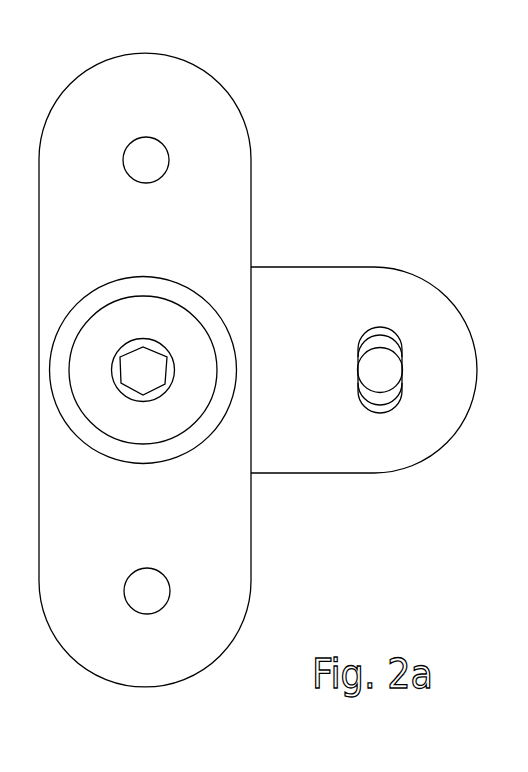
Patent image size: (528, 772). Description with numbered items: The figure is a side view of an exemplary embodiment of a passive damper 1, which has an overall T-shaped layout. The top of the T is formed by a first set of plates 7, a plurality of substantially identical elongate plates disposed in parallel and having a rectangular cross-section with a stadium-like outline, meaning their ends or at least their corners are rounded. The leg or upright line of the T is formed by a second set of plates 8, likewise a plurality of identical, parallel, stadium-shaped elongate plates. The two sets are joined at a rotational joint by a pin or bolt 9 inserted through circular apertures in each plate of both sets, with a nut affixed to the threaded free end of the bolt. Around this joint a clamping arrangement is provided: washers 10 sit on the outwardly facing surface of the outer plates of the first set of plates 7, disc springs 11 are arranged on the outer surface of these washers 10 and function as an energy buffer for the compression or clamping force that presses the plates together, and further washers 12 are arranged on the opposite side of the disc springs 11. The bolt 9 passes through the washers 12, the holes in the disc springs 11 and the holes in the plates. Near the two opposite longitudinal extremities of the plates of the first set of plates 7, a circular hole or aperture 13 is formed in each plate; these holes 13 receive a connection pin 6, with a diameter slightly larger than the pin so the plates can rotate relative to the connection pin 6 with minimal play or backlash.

The passive damper 1 is at (368, 170).
The connection pin 6 is at (388, 365).
The first set of plates 7 is at (228, 175).
The second set of plates 8 is at (320, 457).
The pin or bolt 9 is at (158, 397).
The washers 10 is at (145, 292).
The disc springs 11 is at (158, 322).
The washers 12 is at (143, 378).
The circular hole or aperture 13 is at (148, 148).